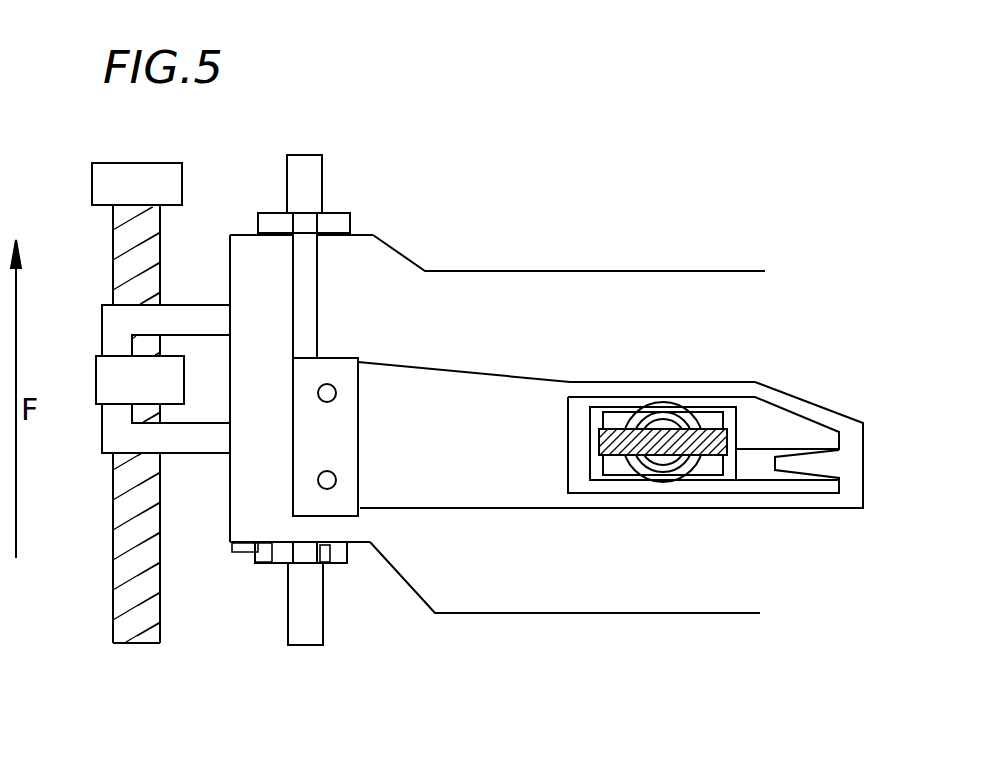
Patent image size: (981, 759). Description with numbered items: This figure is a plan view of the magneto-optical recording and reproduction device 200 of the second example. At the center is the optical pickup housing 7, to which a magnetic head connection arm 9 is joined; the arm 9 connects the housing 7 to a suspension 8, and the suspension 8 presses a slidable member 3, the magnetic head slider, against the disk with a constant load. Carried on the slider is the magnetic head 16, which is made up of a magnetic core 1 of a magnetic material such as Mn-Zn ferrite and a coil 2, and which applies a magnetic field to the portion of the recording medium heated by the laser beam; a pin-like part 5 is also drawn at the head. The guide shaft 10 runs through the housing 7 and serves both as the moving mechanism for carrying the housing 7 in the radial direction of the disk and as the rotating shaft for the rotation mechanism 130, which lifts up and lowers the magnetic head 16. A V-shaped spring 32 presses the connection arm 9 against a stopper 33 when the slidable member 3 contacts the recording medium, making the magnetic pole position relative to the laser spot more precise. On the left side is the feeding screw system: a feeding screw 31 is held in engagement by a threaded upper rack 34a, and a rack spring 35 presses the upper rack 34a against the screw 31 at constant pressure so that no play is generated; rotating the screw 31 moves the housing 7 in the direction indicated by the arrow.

The magnetic core 1 is at (620, 432).
The coil 2 is at (675, 415).
The slidable member 3 is at (766, 460).
The pin 5 is at (667, 482).
The optical pickup housing 7 is at (513, 597).
The suspension 8 is at (470, 405).
The magnetic head connection arm 9 is at (308, 277).
The guide shaft 10 is at (310, 163).
The magnetic head 16 is at (693, 232).
The feeding screw 31 is at (143, 630).
The V-shaped spring 32 is at (258, 552).
The stopper 33 is at (322, 562).
The upper rack 34a is at (117, 392).
The rack spring 35 is at (192, 317).
The rotation mechanism 130 is at (335, 222).
The magneto-optical recording and reproduction device 200 is at (614, 129).